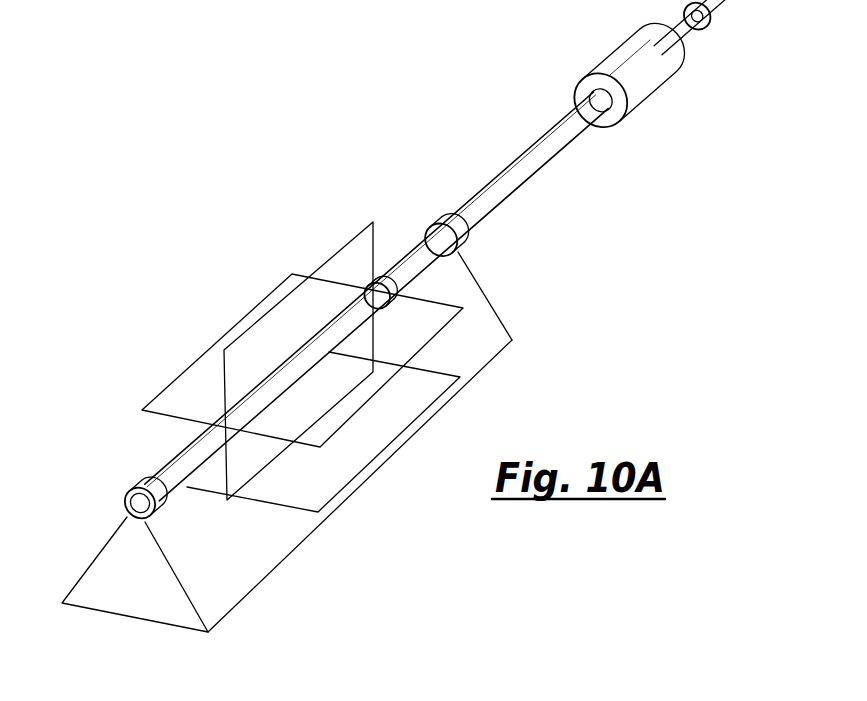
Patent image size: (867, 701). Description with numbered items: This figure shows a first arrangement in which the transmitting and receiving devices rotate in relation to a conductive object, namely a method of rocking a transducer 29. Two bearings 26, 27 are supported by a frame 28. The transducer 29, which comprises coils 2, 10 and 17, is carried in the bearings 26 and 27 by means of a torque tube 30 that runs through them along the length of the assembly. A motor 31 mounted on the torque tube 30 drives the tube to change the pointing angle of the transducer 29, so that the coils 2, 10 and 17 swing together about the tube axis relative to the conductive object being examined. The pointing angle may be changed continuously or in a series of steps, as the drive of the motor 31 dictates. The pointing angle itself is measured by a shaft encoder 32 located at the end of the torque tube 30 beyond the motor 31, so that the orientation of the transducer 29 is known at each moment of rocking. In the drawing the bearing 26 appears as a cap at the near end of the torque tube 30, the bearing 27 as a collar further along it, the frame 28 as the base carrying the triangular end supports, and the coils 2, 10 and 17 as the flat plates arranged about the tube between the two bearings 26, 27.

The coil 2 is at (337, 252).
The coil 10 is at (435, 342).
The coil 17 is at (277, 508).
The bearing 26 is at (124, 500).
The bearing 27 is at (440, 228).
The frame 28 is at (307, 540).
The transducer 29 is at (187, 414).
The torque tube 30 is at (520, 182).
The motor 31 is at (624, 60).
The shaft encoder 32 is at (724, 16).